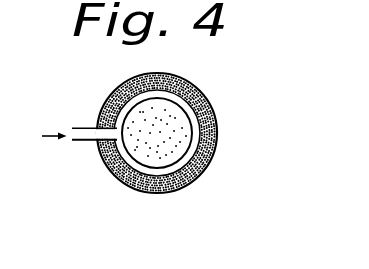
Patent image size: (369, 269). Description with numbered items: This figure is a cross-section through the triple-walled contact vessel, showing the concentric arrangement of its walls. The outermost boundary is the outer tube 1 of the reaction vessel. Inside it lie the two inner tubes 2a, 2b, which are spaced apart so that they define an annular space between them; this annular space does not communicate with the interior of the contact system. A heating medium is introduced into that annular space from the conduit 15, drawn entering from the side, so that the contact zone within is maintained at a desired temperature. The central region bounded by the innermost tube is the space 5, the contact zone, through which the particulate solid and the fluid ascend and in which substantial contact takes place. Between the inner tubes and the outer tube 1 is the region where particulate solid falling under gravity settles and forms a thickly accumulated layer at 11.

The conduit 15 is at (82, 127).
The thickly accumulated layer 11 is at (253, 69).
The outer tube 1 is at (248, 112).
The space (contact zone) 5 is at (183, 148).
The inner tube 2b is at (125, 160).
The inner tube 2a is at (147, 188).